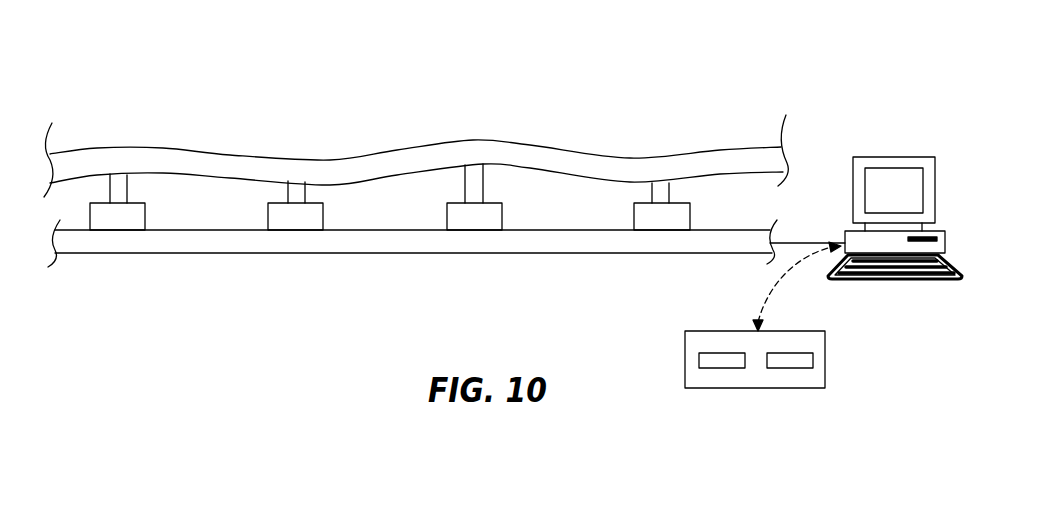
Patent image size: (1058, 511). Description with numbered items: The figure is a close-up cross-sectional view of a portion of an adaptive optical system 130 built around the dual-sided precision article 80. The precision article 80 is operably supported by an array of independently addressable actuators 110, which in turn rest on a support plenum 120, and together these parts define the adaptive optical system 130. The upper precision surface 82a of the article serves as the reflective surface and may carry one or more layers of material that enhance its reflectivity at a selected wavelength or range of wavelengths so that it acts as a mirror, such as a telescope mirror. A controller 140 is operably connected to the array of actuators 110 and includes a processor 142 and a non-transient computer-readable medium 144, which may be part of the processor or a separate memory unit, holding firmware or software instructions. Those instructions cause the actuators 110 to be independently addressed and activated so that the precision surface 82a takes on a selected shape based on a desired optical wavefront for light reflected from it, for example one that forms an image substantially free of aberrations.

The dual-sided precision article 80 is at (416, 138).
The precision surface 82a is at (367, 151).
The actuators 110 is at (145, 217).
The support plenum 120 is at (185, 245).
The adaptive optical system 130 is at (658, 58).
The controller 140 is at (887, 157).
The processor 142 is at (727, 368).
The non-transient computer-readable medium 144 is at (787, 368).